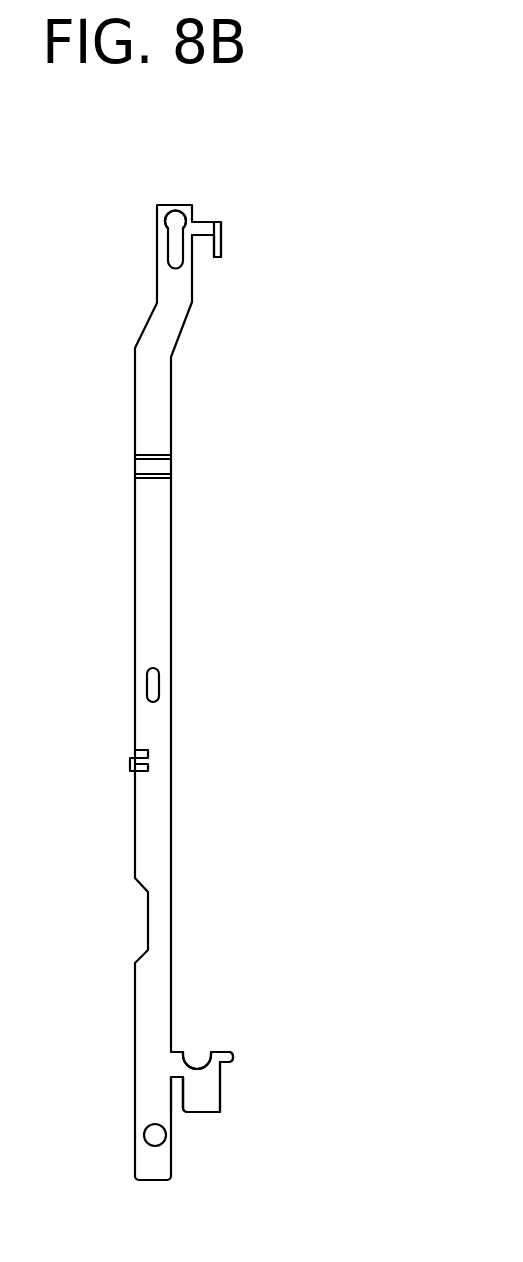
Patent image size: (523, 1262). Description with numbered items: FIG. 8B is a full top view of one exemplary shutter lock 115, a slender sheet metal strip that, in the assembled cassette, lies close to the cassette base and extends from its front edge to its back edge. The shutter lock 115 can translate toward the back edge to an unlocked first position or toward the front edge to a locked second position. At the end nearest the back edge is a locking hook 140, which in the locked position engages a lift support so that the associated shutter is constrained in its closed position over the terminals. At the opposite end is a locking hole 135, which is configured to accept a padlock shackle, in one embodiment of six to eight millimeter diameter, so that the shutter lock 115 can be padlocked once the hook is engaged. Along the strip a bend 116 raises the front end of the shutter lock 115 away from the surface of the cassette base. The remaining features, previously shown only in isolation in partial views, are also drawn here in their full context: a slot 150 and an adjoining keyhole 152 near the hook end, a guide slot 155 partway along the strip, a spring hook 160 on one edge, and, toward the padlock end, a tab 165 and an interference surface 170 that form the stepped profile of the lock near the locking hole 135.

The shutter lock 115 is at (205, 726).
The bend 116 is at (170, 465).
The locking hole 135 is at (143, 1132).
The locking hook 140 is at (222, 237).
The slot 150 is at (168, 245).
The keyhole 152 is at (173, 213).
The guide slot 155 is at (147, 675).
The spring hook 160 is at (130, 763).
The tab 165 is at (223, 1052).
The interference surface 170 is at (177, 1095).